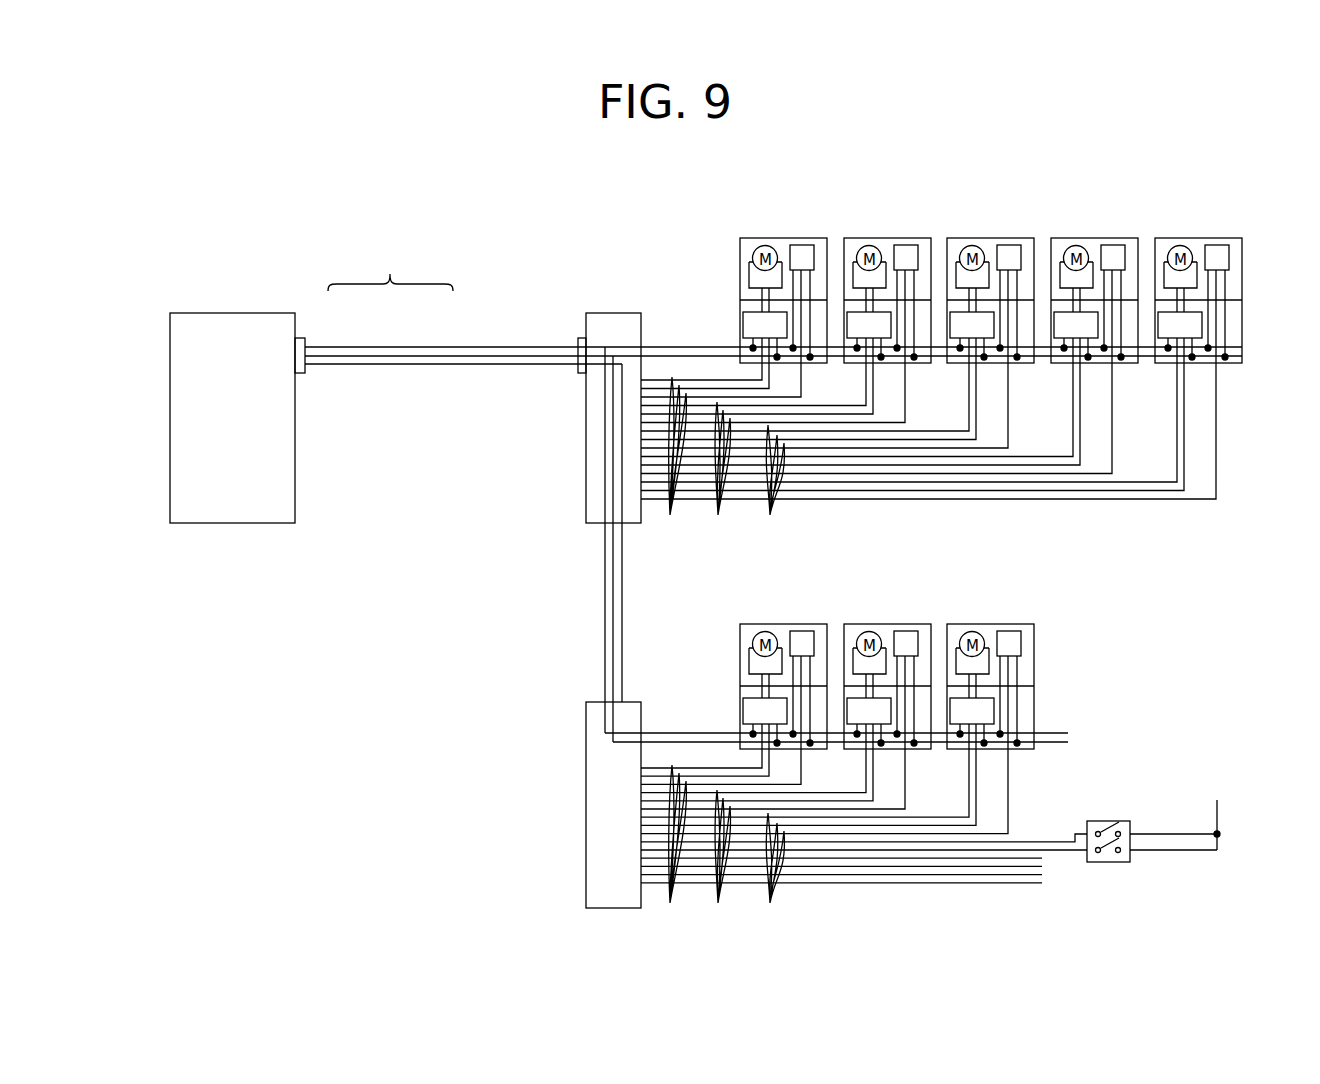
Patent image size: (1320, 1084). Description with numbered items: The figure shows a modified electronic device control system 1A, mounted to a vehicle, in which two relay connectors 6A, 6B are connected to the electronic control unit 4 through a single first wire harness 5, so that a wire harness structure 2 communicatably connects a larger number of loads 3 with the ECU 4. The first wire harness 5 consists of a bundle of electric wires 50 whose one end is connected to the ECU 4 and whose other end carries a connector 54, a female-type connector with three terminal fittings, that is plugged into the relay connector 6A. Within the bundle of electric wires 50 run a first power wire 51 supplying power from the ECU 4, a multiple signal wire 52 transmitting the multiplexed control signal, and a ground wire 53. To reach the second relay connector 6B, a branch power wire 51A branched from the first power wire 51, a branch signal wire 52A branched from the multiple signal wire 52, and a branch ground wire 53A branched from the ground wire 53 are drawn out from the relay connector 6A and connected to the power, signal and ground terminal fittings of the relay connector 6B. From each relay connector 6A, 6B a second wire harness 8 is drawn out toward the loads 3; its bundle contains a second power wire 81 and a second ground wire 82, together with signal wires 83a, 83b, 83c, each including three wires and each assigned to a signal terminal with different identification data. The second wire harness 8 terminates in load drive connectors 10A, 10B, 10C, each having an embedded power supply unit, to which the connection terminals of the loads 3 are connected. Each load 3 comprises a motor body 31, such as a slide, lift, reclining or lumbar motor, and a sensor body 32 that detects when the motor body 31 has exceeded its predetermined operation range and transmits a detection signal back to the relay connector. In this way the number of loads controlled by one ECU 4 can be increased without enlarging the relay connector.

The electronic device control system 1A is at (629, 216).
The wire harness structure 2 is at (657, 227).
The loads 3 is at (818, 238).
The electronic control unit (ECU) 4 is at (232, 313).
The first wire harness 5 is at (463, 286).
The relay connector 6A is at (606, 313).
The relay connector 6B is at (596, 702).
The second wire harness 8 is at (688, 267).
The load drive connector 10A is at (817, 363).
The load drive connector 10B is at (921, 363).
The load drive connector 10C is at (1024, 363).
The motor body 31 is at (765, 246).
The sensor body 32 is at (800, 245).
The bundle of electric wires 50 is at (390, 270).
The first power wire 51 is at (342, 345).
The multiple signal wire 52 is at (381, 354).
The ground wire 53 is at (422, 362).
The connector 54 is at (580, 337).
The branch power wire 51A is at (603, 617).
The branch signal wire 52A is at (611, 596).
The branch ground wire 53A is at (619, 584).
The second power wire 81 is at (657, 346).
The second ground wire 82 is at (703, 355).
The signal wire 83a is at (673, 653).
The signal wire 83b is at (723, 666).
The signal wire 83c is at (774, 677).